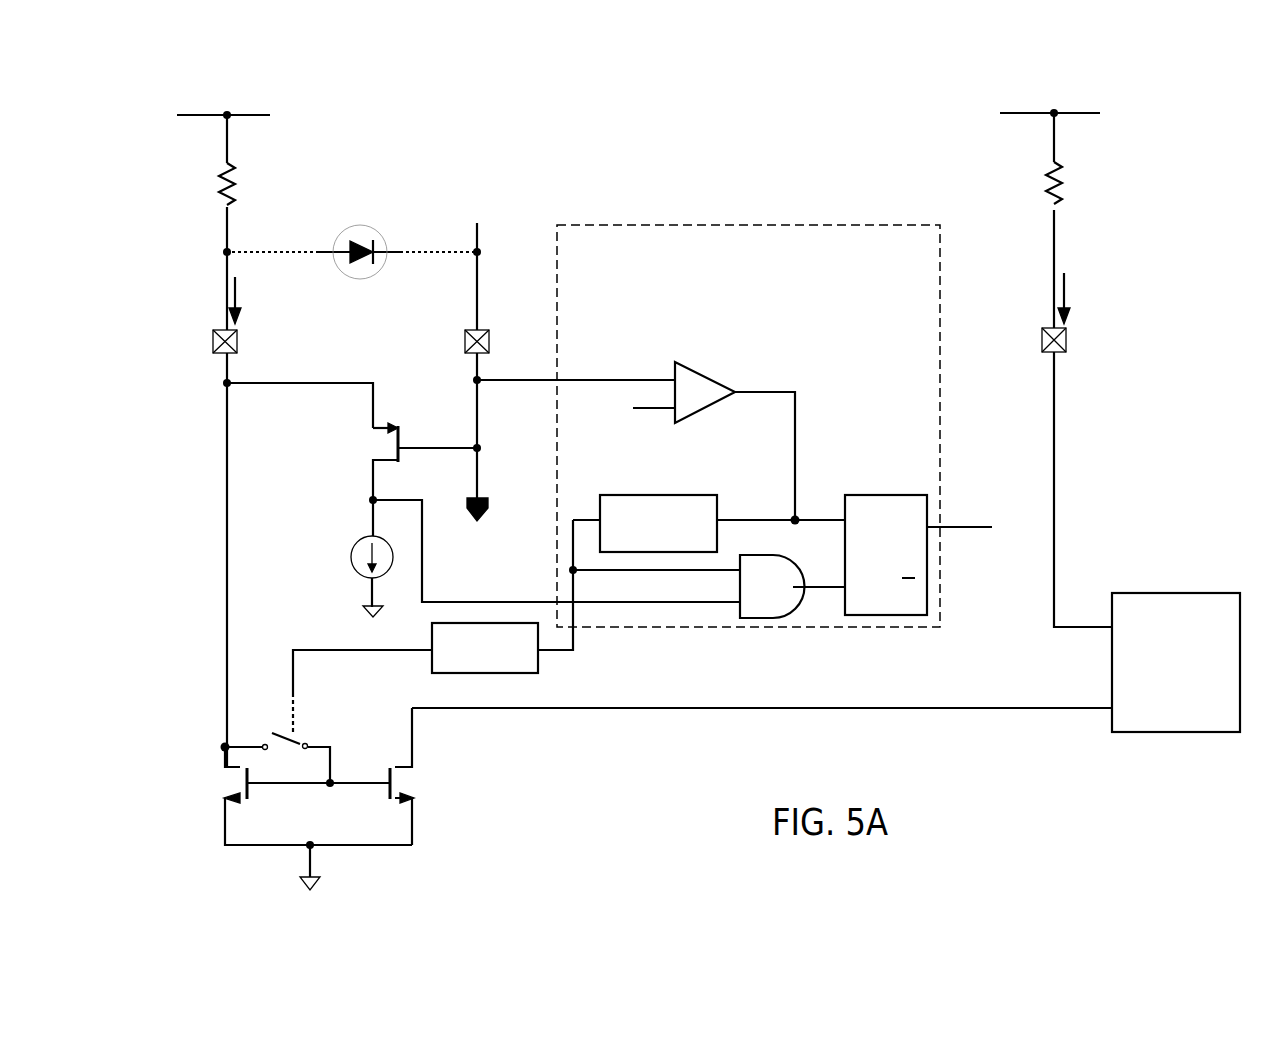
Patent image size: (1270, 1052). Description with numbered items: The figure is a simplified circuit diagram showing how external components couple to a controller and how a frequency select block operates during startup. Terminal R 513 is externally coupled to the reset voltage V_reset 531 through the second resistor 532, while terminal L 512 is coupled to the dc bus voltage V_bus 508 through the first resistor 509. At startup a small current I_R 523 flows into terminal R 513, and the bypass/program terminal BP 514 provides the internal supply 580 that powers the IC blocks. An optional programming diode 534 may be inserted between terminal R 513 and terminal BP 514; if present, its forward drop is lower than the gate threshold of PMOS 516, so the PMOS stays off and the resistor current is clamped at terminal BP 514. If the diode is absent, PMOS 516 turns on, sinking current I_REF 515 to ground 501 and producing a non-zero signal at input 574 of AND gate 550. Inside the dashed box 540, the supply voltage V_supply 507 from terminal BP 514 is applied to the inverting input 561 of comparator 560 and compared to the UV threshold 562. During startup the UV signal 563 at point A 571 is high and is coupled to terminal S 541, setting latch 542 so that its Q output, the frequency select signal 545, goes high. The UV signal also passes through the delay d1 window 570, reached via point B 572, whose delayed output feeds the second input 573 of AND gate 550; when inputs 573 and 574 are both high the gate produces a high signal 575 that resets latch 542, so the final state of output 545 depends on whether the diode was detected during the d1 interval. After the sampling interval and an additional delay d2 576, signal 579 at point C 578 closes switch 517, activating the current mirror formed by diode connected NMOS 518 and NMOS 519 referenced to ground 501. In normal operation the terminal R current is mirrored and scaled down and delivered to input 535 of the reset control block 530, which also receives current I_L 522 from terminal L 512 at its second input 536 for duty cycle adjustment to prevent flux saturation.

The reset voltage V_reset 531 is at (232, 105).
The resistor R2 532 is at (240, 183).
The option diode 534 is at (365, 224).
The terminal R 513 is at (201, 327).
The current I_R 523 is at (275, 320).
The terminal BP 514 is at (492, 338).
The PMOS 516 is at (385, 422).
The current I_REF 515 is at (350, 544).
The internal supply 580 is at (497, 526).
The ground 501 is at (369, 597).
The box representing frequency select block 540 is at (756, 225).
The comparator 560 is at (689, 362).
The inverting input 561 is at (648, 374).
The UV threshold 562 is at (658, 423).
The UV signal 563 is at (808, 366).
The supply voltage V_supply 507 is at (540, 372).
The delay d1 window 570 is at (689, 490).
The point A 571 is at (768, 500).
The point B 572 is at (581, 501).
The terminal S 541 is at (826, 510).
The latch 542 is at (879, 491).
The frequency select signal 545 is at (991, 486).
The AND gate 550 is at (772, 586).
The second input of AND gate 573 is at (710, 583).
The input of AND gate 574 is at (732, 609).
The high signal 575 is at (836, 595).
The delay d2 576 is at (543, 665).
The point C 578 is at (406, 658).
The signal 579 is at (288, 699).
The switch 517 is at (304, 737).
The diode connected NMOS 518 is at (217, 774).
The NMOS 519 is at (412, 783).
The dc bus voltage V_bus 508 is at (1060, 104).
The resistor R1 509 is at (1068, 173).
The terminal L 512 is at (1027, 324).
The current I_L 522 is at (1082, 314).
The reset control block 530 is at (1163, 592).
The second input 536 is at (1073, 620).
The input of reset control block 535 is at (1012, 700).